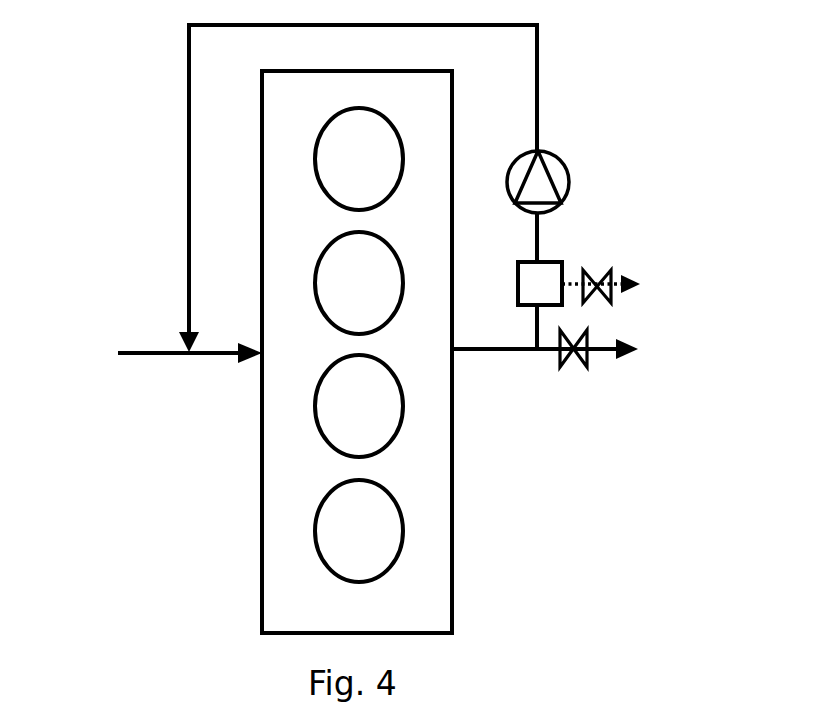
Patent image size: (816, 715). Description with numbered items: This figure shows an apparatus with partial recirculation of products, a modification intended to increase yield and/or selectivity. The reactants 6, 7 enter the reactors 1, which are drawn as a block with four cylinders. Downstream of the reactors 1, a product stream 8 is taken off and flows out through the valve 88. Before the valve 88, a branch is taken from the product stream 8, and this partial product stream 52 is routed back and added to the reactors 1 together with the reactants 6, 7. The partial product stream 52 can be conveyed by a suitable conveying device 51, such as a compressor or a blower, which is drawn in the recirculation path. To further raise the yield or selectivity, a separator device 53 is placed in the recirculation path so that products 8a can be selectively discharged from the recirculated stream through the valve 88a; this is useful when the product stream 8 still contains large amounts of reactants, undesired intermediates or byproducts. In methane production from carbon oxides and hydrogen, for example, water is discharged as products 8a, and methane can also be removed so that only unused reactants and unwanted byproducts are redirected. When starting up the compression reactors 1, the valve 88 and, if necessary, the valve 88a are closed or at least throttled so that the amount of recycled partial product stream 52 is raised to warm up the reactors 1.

The reactors 1 is at (372, 522).
The reactant 6 is at (150, 353).
The reactant 7 is at (150, 353).
The product stream 8 is at (569, 340).
The discharged products 8a is at (630, 286).
The conveying device 51 is at (569, 175).
The partial product stream 52 is at (333, 188).
The separator device 53 is at (542, 262).
The valve 88 is at (566, 370).
The valve 88a is at (610, 269).